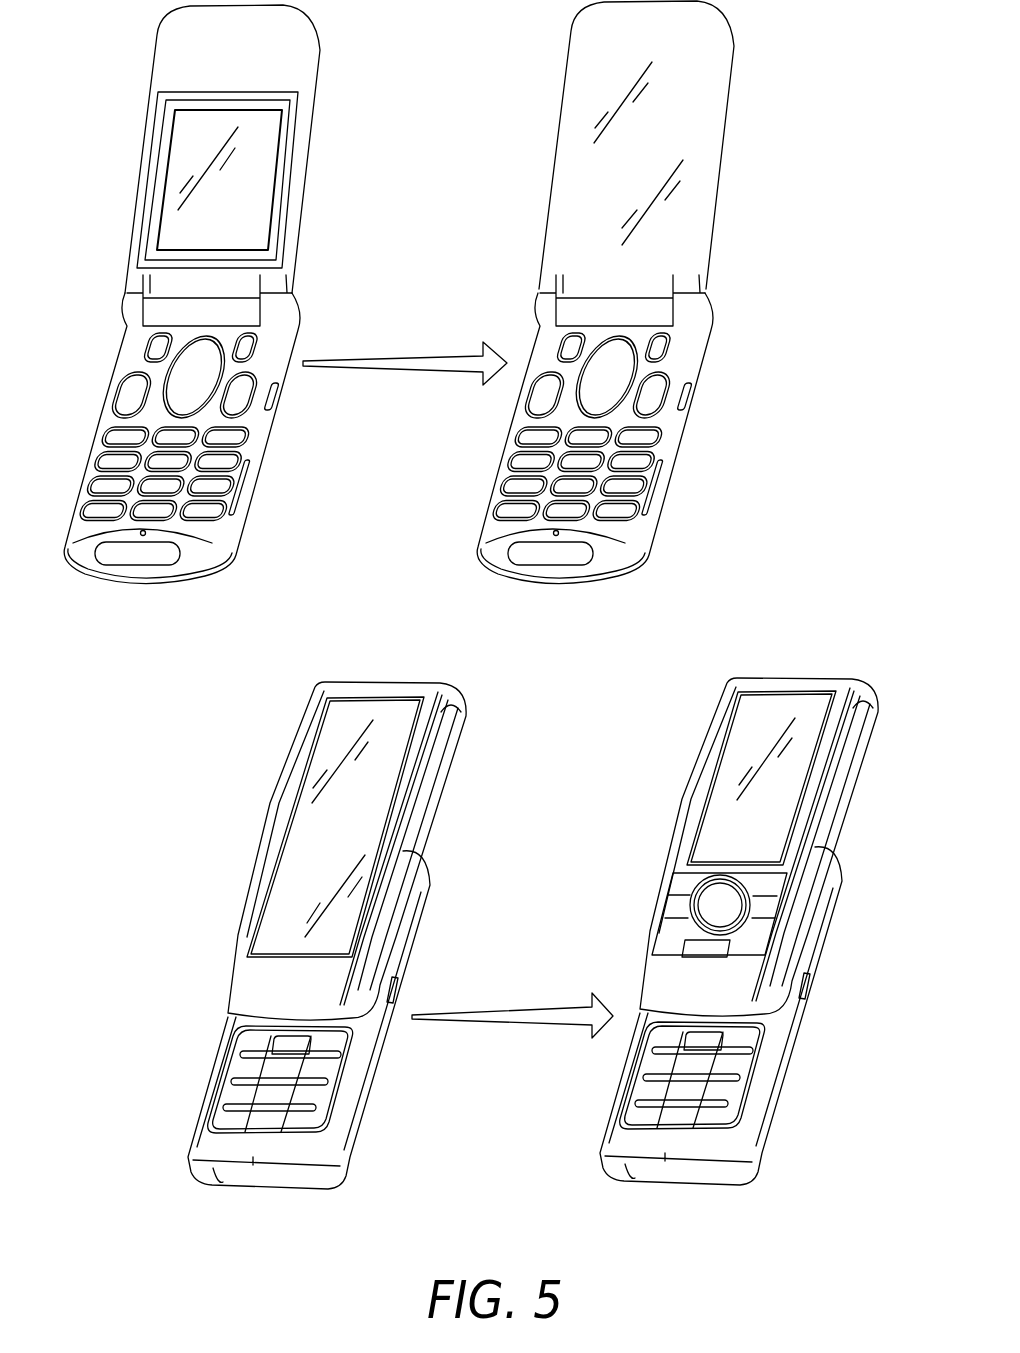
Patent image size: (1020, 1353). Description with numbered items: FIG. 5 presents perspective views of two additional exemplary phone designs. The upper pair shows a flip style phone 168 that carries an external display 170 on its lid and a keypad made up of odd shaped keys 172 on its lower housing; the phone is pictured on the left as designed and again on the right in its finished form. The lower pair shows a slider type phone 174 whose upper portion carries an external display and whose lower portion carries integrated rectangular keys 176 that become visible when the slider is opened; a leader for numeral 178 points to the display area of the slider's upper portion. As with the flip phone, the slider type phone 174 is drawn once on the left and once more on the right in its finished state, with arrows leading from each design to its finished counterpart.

The flip style phone 168 is at (268, 365).
The external display 170 is at (166, 62).
The odd shaped keys 172 is at (103, 433).
The slider type phone 174 is at (412, 900).
The integrated rectangular keys 176 is at (237, 1072).
The slider cover with display 178 is at (293, 857).